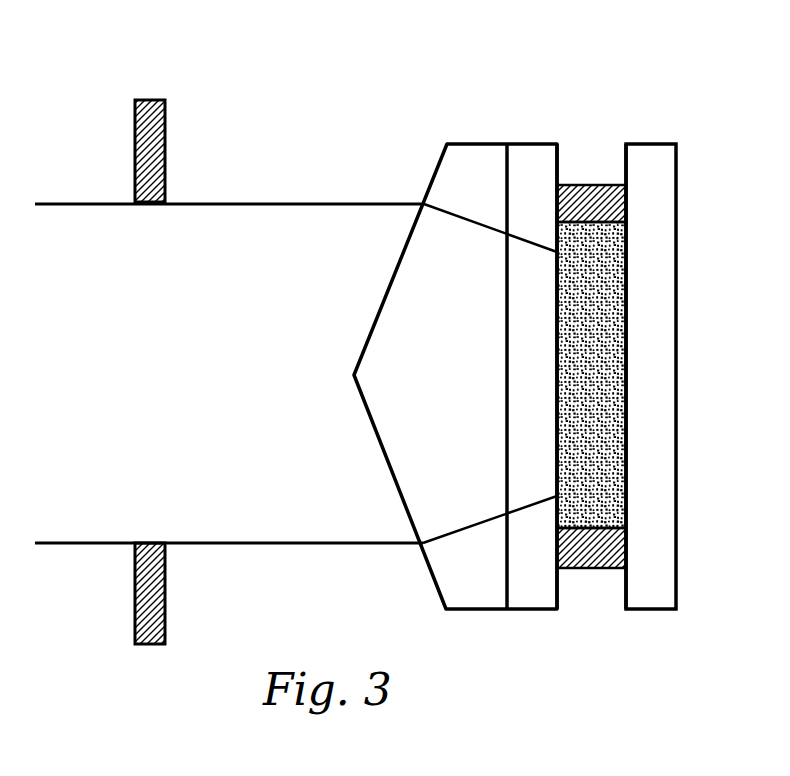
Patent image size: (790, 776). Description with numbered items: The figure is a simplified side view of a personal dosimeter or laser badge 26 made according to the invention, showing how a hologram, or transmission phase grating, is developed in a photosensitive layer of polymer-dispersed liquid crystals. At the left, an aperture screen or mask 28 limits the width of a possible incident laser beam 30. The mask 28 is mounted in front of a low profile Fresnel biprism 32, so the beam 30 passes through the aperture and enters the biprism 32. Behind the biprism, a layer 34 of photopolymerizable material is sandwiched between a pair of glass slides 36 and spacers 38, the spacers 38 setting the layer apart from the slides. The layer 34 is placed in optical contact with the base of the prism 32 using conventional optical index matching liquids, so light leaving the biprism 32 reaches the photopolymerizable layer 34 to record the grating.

The personal dosimeter or laser badge 26 is at (702, 90).
The aperture screen or mask 28 is at (135, 130).
The incident laser beam 30 is at (128, 387).
The low profile Fresnel biprism 32 is at (473, 610).
The layer of photopolymerizable material 34 is at (626, 236).
The glass slides 36 is at (647, 144).
The spacers 38 is at (581, 185).